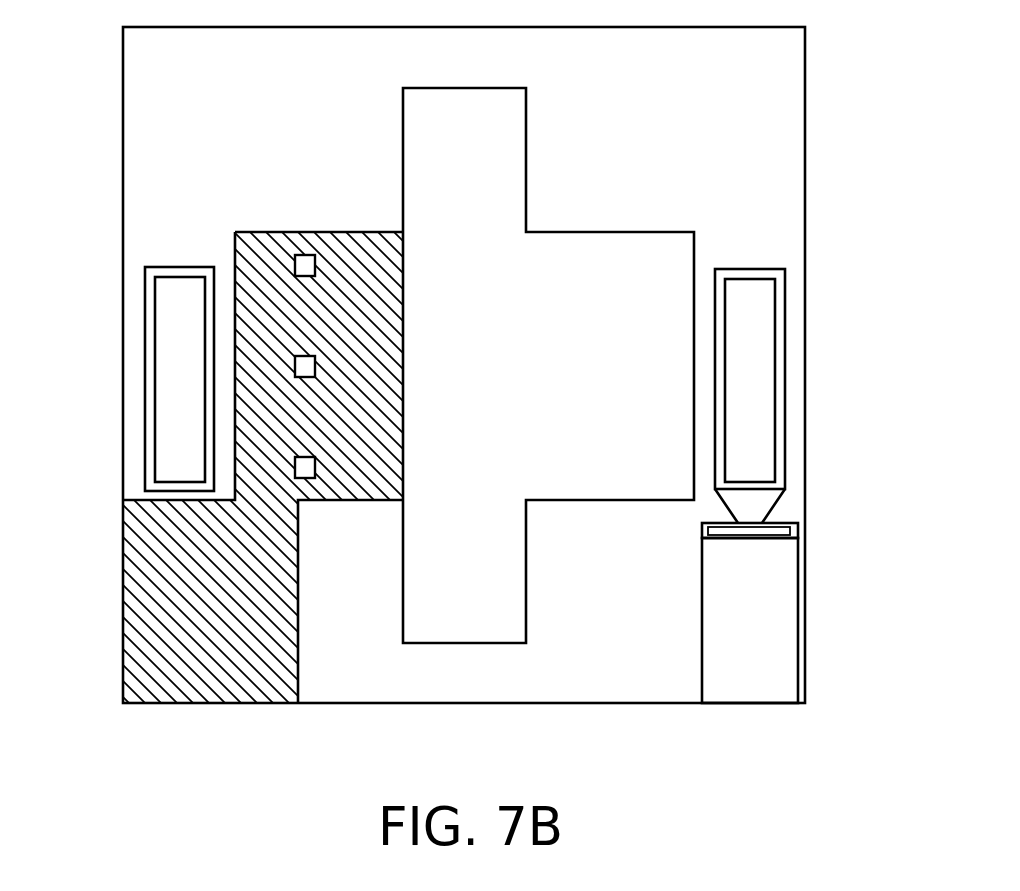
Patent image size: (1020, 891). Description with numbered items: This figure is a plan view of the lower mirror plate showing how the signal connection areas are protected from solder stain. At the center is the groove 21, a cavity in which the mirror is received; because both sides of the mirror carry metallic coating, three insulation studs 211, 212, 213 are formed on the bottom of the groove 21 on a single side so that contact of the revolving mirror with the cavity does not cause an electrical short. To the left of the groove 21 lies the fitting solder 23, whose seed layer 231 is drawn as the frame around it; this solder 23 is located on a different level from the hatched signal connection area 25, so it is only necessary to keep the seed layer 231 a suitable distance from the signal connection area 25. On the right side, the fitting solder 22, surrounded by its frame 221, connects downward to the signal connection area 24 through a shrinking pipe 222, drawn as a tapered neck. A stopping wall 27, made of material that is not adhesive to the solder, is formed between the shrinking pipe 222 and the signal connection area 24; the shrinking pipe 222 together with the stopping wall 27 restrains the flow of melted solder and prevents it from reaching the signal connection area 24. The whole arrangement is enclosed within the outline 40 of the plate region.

The pixel region 40 is at (772, 89).
The groove 21 is at (667, 262).
The insulation stud 211 is at (297, 477).
The insulation stud 212 is at (295, 365).
The insulation stud 213 is at (295, 263).
The fitting solder 22 is at (758, 362).
The electrode frame 221 is at (780, 395).
The shrinking pipe 222 is at (757, 500).
The fitting solder 23 is at (175, 400).
The seed layer 231 is at (150, 453).
The signal connection area 24 is at (772, 600).
The signal connection area 25 is at (152, 633).
The stopping wall 27 is at (770, 533).